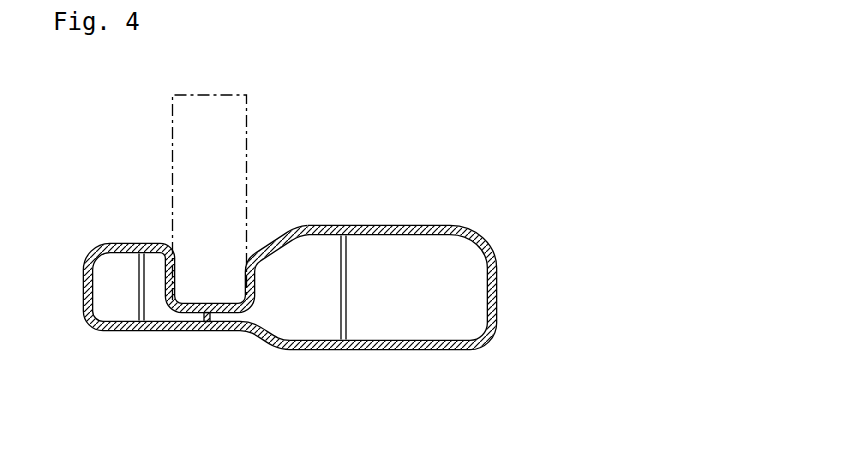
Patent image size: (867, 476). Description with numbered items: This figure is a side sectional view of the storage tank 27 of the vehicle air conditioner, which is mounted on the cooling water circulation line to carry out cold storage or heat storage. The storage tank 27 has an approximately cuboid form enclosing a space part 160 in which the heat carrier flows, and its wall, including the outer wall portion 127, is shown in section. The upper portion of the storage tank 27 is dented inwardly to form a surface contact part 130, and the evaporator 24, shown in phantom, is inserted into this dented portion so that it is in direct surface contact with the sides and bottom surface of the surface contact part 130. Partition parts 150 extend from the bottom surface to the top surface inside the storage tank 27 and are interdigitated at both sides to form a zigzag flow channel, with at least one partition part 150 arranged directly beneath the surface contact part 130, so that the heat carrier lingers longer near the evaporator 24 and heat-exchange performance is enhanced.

The evaporator 24 is at (257, 107).
The storage tank 27 is at (484, 231).
The outer wall of frame member 127 is at (497, 297).
The surface contact part 130 is at (244, 281).
The partition parts 150 is at (143, 300).
The space part 160 is at (374, 292).